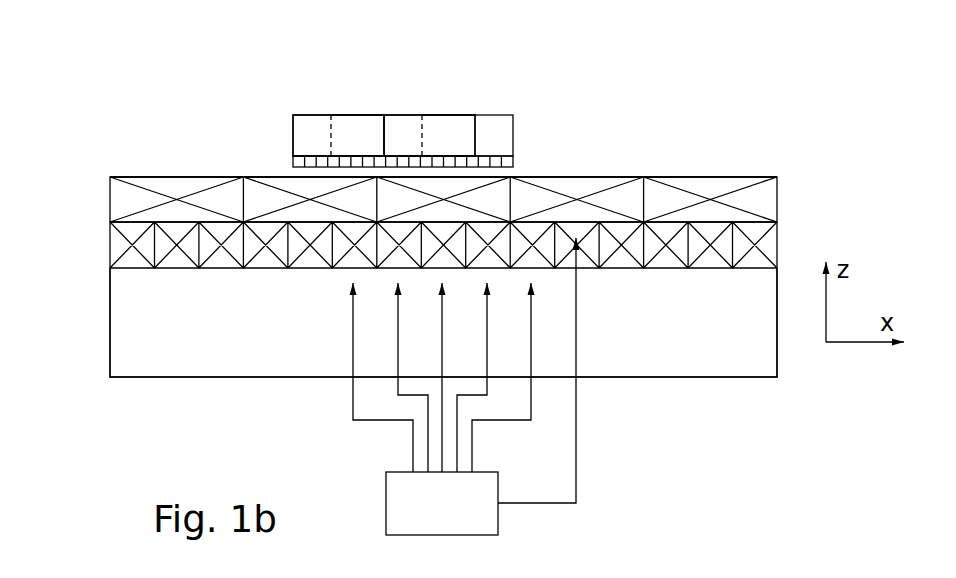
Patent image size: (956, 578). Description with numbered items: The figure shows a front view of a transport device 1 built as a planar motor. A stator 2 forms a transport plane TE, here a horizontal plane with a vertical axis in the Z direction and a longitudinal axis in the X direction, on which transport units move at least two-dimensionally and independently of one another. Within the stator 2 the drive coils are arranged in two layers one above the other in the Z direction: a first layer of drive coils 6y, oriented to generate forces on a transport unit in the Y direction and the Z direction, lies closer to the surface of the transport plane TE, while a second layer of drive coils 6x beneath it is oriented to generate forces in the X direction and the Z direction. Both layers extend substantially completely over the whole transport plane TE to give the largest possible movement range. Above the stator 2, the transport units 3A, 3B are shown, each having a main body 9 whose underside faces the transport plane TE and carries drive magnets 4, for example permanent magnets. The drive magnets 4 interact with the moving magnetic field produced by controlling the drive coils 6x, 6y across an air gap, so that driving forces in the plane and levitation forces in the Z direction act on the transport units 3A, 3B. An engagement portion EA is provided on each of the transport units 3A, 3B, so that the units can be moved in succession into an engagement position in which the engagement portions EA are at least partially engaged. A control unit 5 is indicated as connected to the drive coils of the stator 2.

The transport device 1 is at (91, 153).
The stator 2 is at (147, 333).
The transport unit 3A is at (331, 100).
The transport unit 3B is at (443, 100).
The drive magnets 4 is at (286, 160).
The control unit 5 is at (434, 516).
The drive coils 6x is at (265, 263).
The drive coils 6y is at (755, 198).
The main body 9 is at (355, 147).
The engagement portion EA is at (286, 125).
The transport plane TE is at (741, 166).